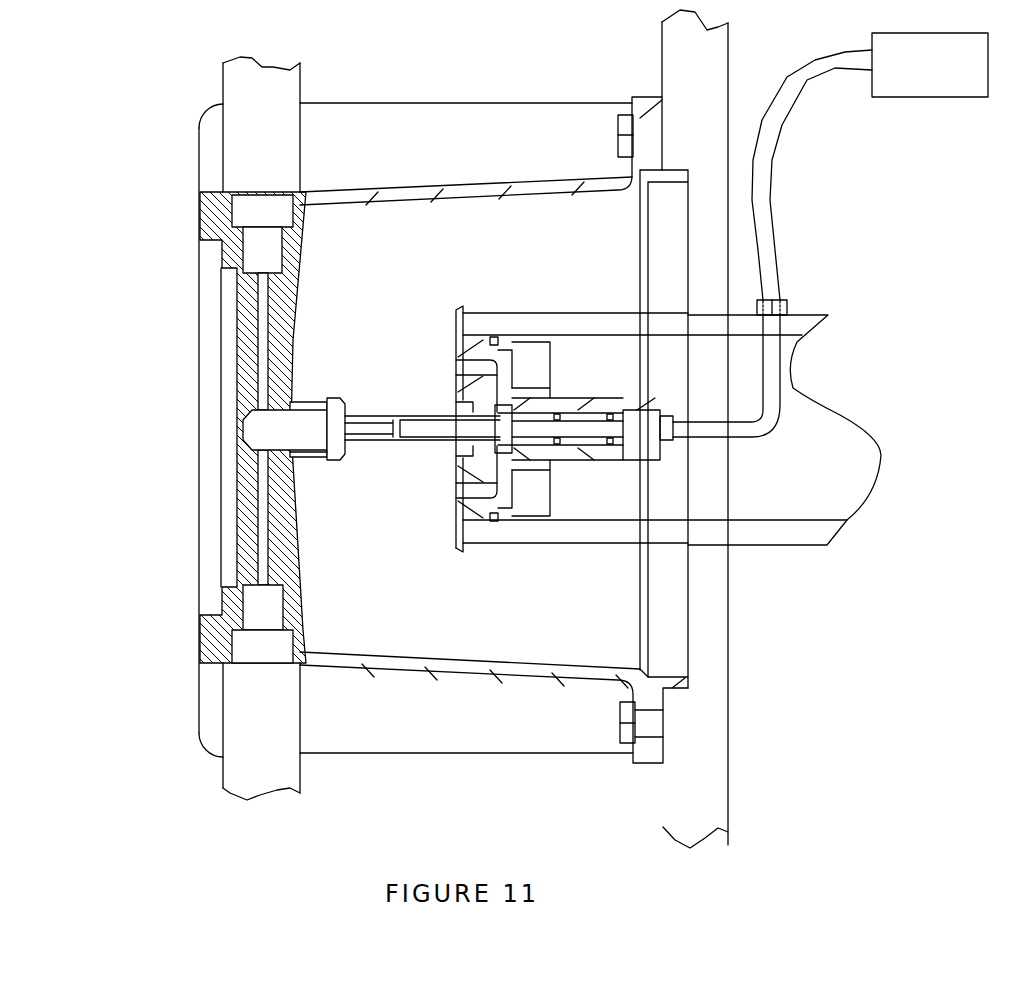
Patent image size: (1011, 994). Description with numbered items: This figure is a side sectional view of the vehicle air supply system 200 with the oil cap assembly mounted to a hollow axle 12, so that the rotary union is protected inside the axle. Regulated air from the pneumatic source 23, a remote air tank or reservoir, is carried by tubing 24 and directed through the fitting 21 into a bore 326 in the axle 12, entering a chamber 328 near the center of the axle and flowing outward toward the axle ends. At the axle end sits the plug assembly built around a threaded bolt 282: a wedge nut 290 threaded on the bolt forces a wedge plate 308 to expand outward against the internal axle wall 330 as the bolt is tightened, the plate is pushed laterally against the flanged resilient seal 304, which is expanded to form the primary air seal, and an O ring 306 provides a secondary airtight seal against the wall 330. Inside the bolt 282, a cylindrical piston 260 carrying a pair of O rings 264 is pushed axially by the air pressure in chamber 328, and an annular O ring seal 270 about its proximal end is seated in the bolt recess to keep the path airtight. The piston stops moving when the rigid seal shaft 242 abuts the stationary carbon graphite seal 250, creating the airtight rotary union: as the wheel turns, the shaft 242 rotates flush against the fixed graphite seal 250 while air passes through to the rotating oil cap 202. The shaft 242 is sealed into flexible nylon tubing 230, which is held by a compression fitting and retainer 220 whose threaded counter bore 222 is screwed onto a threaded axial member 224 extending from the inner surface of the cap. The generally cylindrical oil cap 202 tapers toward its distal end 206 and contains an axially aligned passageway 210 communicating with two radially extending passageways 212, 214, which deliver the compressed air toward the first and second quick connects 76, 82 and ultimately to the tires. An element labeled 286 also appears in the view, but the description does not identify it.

The hollow axle 12 is at (737, 313).
The fitting 21 is at (788, 304).
The pneumatic source 23 is at (905, 98).
The tubing 24 is at (822, 102).
The first quick connect 76 is at (261, 124).
The second quick connect 82 is at (261, 731).
The vehicle air supply system 200 is at (413, 548).
The oil cap 202 is at (454, 170).
The distal end 206 is at (209, 132).
The axially aligned passageway 210 is at (265, 434).
The radially extending passageway 212 is at (253, 257).
The radially extending passageway 214 is at (258, 610).
The compression fitting and retainer 220 is at (297, 405).
The threaded counter bore 222 is at (295, 413).
The threaded axial member 224 is at (290, 456).
The flexible nylon tubing 230 is at (400, 442).
The seal shaft 242 is at (453, 445).
The carbon graphite seal 250 is at (500, 410).
The piston 260 is at (645, 412).
The O rings 264 is at (609, 446).
The O ring seal 270 is at (457, 400).
The threaded bolt 282 is at (597, 397).
The piston head 286 is at (638, 440).
The wedge nut 290 is at (545, 380).
The flanged resilient seal 304 is at (461, 333).
The O ring 306 is at (493, 338).
The wedge plate 308 is at (522, 350).
The bore 326 is at (772, 335).
The chamber 328 is at (797, 444).
The internal axle wall 330 is at (725, 337).